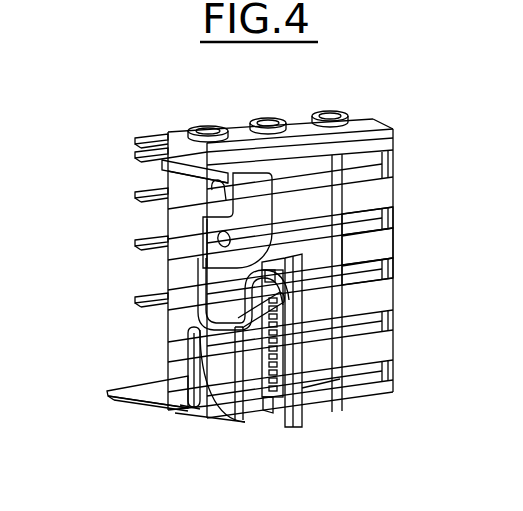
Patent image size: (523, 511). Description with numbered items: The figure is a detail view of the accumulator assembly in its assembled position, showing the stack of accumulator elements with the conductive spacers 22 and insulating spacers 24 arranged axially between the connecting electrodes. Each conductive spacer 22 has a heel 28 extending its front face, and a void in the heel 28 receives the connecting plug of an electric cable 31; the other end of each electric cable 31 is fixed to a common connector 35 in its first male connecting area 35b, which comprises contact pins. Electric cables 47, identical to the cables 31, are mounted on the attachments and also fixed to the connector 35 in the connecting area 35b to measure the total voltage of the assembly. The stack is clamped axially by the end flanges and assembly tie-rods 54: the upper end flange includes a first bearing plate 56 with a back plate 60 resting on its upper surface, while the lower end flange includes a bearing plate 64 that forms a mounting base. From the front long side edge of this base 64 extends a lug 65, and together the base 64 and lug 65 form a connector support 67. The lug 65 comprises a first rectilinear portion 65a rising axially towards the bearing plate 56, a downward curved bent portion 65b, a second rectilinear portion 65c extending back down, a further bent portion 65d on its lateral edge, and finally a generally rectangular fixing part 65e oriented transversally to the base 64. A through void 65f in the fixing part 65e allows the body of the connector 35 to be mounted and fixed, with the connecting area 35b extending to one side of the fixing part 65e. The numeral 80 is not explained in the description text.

The conductive spacer 22 is at (380, 266).
The insulating spacer 24 is at (385, 344).
The heel 28 is at (354, 262).
The electric cable 31 is at (200, 308).
The connector 35 is at (242, 412).
The first male connecting area 35b is at (300, 405).
The electric cable 47 is at (150, 202).
The assembly tie-rod 54 is at (323, 111).
The first bearing plate 56 is at (152, 142).
The back plate 60 is at (372, 120).
The bearing plate 64 is at (136, 395).
The lug 65 is at (292, 428).
The first rectilinear portion 65a is at (180, 406).
The bent portion 65b is at (195, 326).
The second rectilinear portion 65c is at (188, 414).
The bent portion 65d is at (210, 418).
The fixing part 65e is at (342, 378).
The through void 65f is at (270, 415).
The connector support 67 is at (122, 401).
The terminal 80 is at (228, 122).